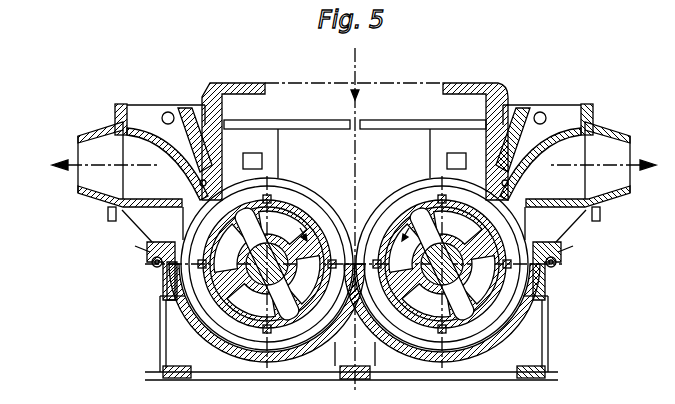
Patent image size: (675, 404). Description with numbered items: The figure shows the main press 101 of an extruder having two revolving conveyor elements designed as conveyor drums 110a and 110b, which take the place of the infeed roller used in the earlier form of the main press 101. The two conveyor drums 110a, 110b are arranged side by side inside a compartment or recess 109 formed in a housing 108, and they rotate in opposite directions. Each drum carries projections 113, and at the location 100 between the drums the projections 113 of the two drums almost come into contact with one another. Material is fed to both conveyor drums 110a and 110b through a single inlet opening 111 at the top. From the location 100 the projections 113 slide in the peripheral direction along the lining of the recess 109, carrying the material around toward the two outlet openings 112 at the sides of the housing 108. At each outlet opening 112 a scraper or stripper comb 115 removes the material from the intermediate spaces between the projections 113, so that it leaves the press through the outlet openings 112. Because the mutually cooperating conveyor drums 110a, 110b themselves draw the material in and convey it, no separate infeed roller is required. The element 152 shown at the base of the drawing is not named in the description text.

The rotary machine 100 is at (413, 171).
The housing 101 is at (503, 81).
The base support 108 is at (532, 340).
The casing 109 is at (183, 315).
The casing side wall 110a is at (188, 288).
The casing side wall 110b is at (518, 286).
The top cover line 111 is at (394, 93).
The inlet duct 112 is at (100, 188).
The rotor 113 is at (291, 185).
The outlet duct 115 is at (190, 191).
The base plate 152 is at (235, 360).